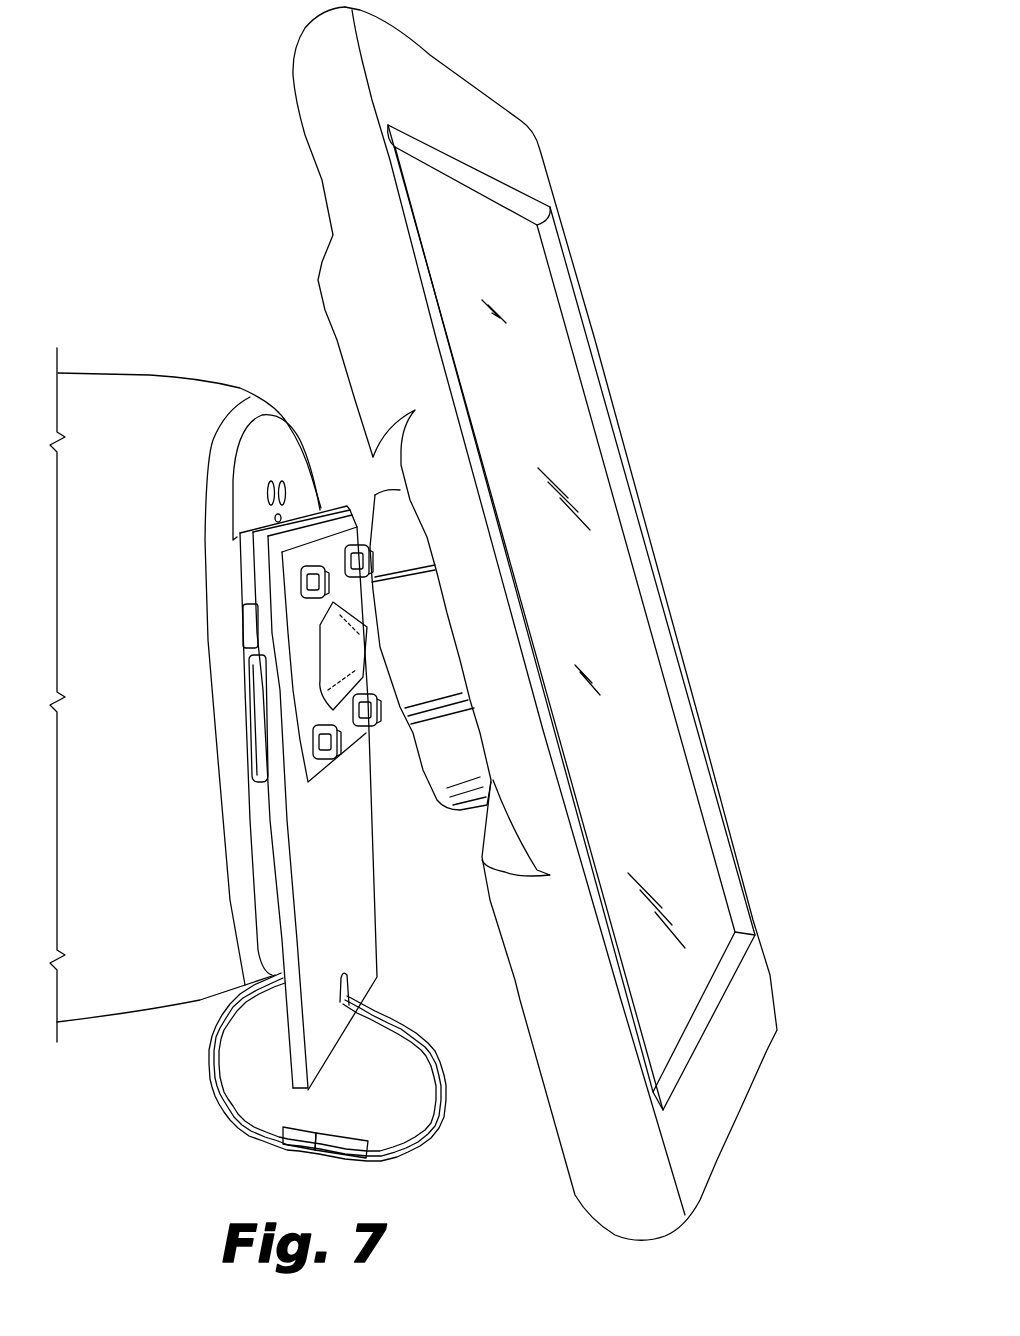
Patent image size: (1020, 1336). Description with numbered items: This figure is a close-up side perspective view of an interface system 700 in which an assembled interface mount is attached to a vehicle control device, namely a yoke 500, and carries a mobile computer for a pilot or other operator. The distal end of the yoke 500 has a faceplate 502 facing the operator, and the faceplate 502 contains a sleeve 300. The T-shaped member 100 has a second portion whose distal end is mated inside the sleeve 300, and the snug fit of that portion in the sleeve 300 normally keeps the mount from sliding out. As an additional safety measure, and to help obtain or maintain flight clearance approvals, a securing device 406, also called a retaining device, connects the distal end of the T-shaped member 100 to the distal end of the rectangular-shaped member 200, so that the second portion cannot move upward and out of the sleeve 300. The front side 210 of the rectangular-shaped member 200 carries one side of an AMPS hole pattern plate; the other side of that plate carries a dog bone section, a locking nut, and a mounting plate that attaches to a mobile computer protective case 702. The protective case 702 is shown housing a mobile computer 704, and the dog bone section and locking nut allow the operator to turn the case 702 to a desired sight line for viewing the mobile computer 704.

The T-shaped member 100 is at (247, 569).
The rectangular-shaped member 200 is at (260, 607).
The front side 210 is at (343, 893).
The sleeve 300 is at (270, 707).
The securing device 406 is at (418, 1143).
The vehicle control device 500 is at (132, 958).
The faceplate 502 is at (277, 456).
The interface system 700 is at (560, 623).
The mobile computer protective case 702 is at (612, 1184).
The mobile computer 704 is at (660, 797).